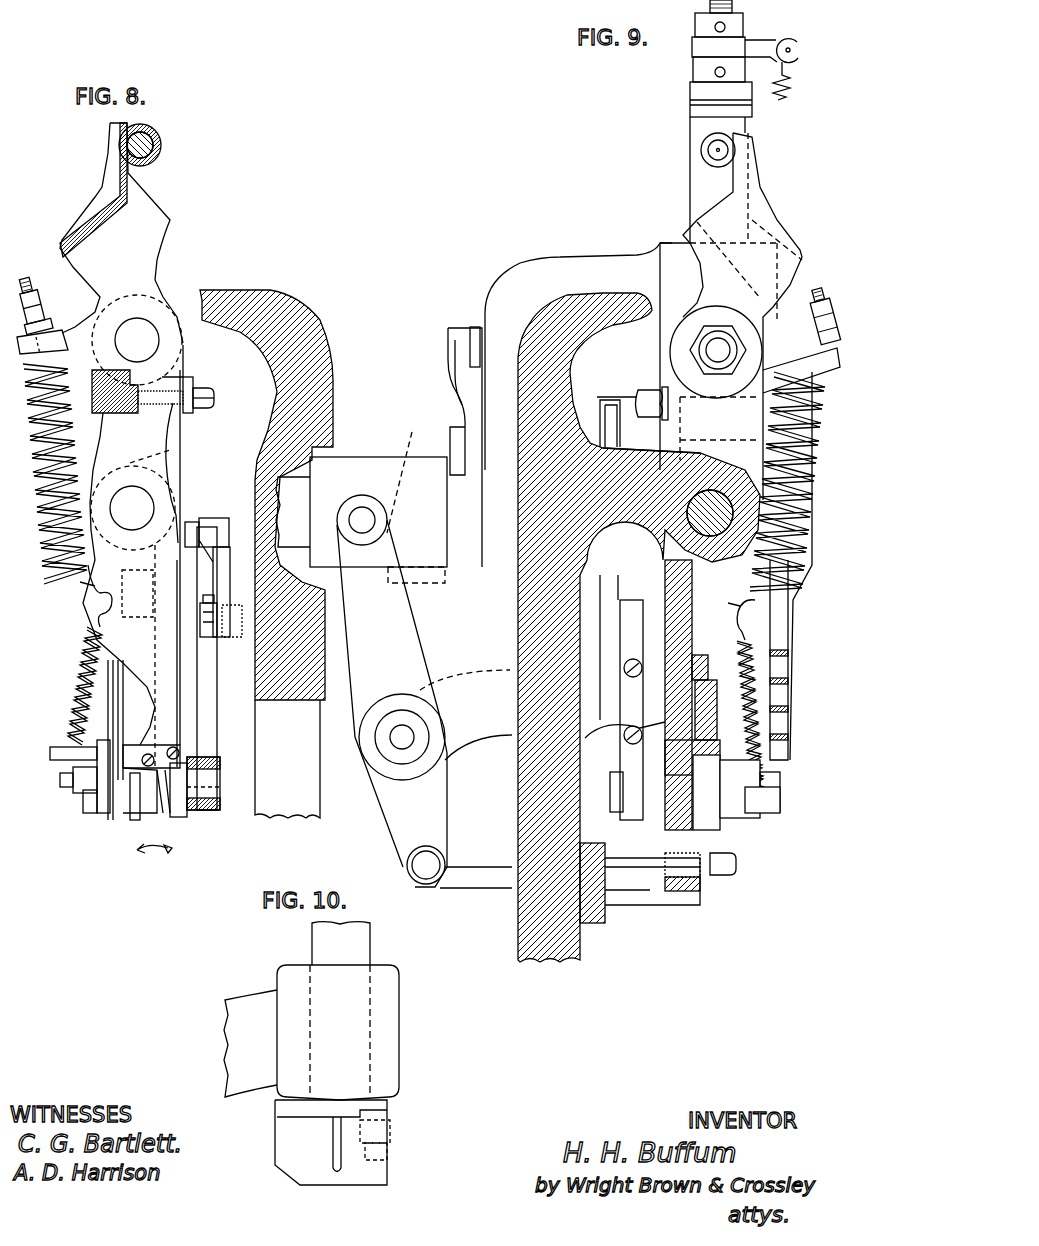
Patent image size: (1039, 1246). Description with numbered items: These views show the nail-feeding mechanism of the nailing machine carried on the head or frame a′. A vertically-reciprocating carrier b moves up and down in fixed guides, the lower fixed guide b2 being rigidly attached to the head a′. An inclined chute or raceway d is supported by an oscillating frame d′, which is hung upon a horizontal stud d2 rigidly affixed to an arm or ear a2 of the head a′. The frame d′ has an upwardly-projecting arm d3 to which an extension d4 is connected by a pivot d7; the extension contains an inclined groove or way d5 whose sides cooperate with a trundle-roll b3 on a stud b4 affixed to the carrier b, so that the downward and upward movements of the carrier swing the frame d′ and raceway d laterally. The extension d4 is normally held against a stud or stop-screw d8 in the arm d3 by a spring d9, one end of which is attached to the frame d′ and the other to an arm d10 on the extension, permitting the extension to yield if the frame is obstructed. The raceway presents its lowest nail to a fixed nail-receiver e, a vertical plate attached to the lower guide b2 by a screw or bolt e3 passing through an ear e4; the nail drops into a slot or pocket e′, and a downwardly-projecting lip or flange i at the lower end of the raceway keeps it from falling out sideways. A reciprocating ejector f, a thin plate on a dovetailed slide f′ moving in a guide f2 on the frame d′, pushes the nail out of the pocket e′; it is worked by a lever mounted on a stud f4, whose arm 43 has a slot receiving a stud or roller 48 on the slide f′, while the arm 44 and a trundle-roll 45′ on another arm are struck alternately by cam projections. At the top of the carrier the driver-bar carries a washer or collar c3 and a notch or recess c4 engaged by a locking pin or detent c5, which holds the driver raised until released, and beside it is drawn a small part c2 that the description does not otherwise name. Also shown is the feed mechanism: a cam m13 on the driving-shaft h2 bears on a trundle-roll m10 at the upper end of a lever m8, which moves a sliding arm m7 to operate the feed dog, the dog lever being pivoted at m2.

In FIG. 9, the vertically-reciprocating carrier b is at (695, 198).
In FIG. 10, the vertically-reciprocating carrier b is at (355, 947).
In FIG. 10, the lower fixed guide b2 is at (385, 1087).
In FIG. 8, the trundle-roll b3 is at (162, 149).
In FIG. 9, the trundle-roll b3 is at (701, 152).
In FIG. 8, the stud b4 is at (150, 130).
In FIG. 9, the stud b4 is at (712, 144).
In FIG. 9, the ring c2 is at (803, 47).
In FIG. 9, the washer or collar c3 is at (753, 110).
In FIG. 9, the notch or recess c4 is at (745, 48).
In FIG. 9, the locking pin or detent c5 is at (798, 84).
In FIG. 9, the inclined chute or raceway d is at (620, 732).
In FIG. 8, the oscillating frame d′ is at (163, 677).
In FIG. 8, the horizontal stud d2 is at (133, 508).
In FIG. 9, the horizontal stud d2 is at (773, 497).
In FIG. 8, the upwardly-projecting arm d3 is at (140, 462).
In FIG. 8, the extension d4 is at (143, 272).
In FIG. 9, the extension d4 is at (717, 275).
In FIG. 8, the inclined groove or way d5 is at (87, 290).
In FIG. 9, the inclined groove or way d5 is at (802, 262).
In FIG. 8, the pivot d7 is at (148, 339).
In FIG. 9, the pivot d7 is at (698, 350).
In FIG. 8, the stud or stop-screw d8 is at (197, 390).
In FIG. 8, the spring d9 is at (45, 492).
In FIG. 9, the spring d9 is at (806, 420).
In FIG. 8, the arm d10 is at (53, 333).
In FIG. 9, the arm d10 is at (783, 344).
In FIG. 8, the head or frame a′ is at (333, 407).
In FIG. 9, the head or frame a′ is at (518, 628).
In FIG. 10, the head or frame a′ is at (250, 1043).
In FIG. 8, the arm or ear a2 is at (153, 590).
In FIG. 9, the arm or ear a2 is at (648, 460).
In FIG. 10, the fixed nail-receiver e is at (358, 1185).
In FIG. 10, the slot or pocket e′ is at (335, 1147).
In FIG. 10, the screw or bolt e3 is at (385, 1157).
In FIG. 10, the ear e4 is at (392, 1128).
In FIG. 8, the reciprocating ejector f is at (176, 800).
In FIG. 8, the dovetailed slide f′ is at (188, 790).
In FIG. 8, the guide f2 is at (168, 850).
In FIG. 8, the stud f4 is at (88, 590).
In FIG. 9, the driving-shaft h2 is at (300, 507).
In FIG. 8, the lip or flange i is at (140, 757).
In FIG. 9, the pivot m2 is at (397, 738).
In FIG. 9, the sliding arm m7 is at (481, 878).
In FIG. 9, the lever m8 is at (397, 820).
In FIG. 9, the trundle-roll m10 is at (362, 507).
In FIG. 9, the cam m13 is at (413, 432).
In FIG. 8, the lever arm 43 is at (208, 730).
In FIG. 8, the lever arm 44 is at (225, 637).
In FIG. 8, the trundle-roll 45′ is at (208, 535).
In FIG. 8, the stud or roller 48 is at (221, 786).